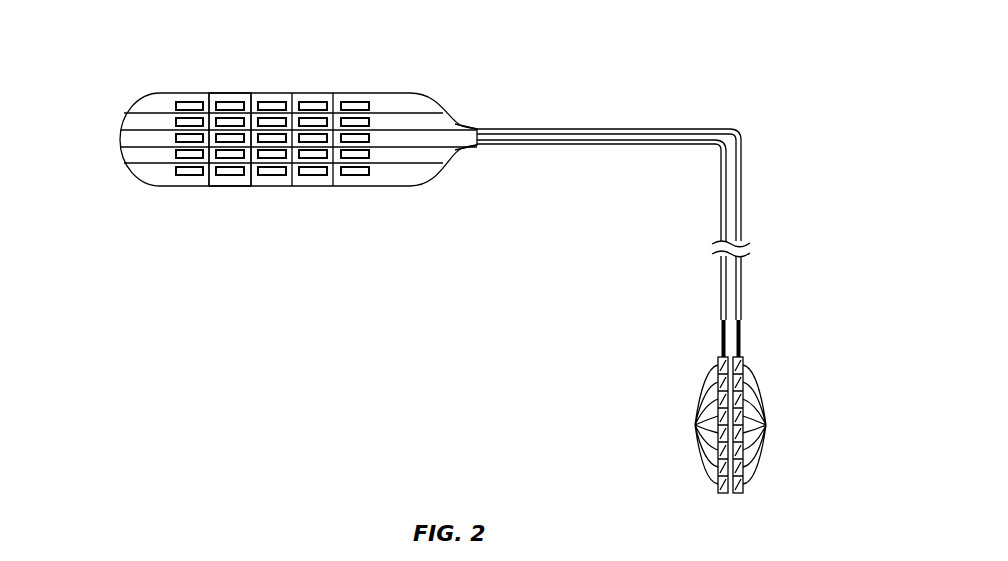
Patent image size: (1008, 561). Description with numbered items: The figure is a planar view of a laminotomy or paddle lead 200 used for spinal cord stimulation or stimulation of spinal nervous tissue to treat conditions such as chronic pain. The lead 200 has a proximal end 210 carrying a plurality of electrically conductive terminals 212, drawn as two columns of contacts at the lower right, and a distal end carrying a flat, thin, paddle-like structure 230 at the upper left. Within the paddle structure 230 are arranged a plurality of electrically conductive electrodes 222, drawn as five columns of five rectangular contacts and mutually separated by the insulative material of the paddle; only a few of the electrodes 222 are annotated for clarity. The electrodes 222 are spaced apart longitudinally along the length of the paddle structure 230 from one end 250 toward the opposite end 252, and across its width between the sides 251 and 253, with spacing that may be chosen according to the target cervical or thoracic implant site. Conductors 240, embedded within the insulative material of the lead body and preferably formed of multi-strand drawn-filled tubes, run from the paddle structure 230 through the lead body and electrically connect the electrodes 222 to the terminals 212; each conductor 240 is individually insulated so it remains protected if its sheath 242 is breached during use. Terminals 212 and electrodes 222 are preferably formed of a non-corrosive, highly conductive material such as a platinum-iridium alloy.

The laminotomy lead 200 is at (730, 62).
The proximal end 210 is at (751, 443).
The electrically conductive terminals 212 is at (734, 425).
The electrically conductive electrodes 222 is at (348, 100).
The paddle structure 230 is at (226, 82).
The conductors 240 is at (723, 340).
The sheath 242 is at (588, 133).
The end of paddle structure 250 is at (132, 52).
The side of paddle structure 251 is at (313, 187).
The end of paddle structure 252 is at (476, 82).
The side of paddle structure 253 is at (309, 92).